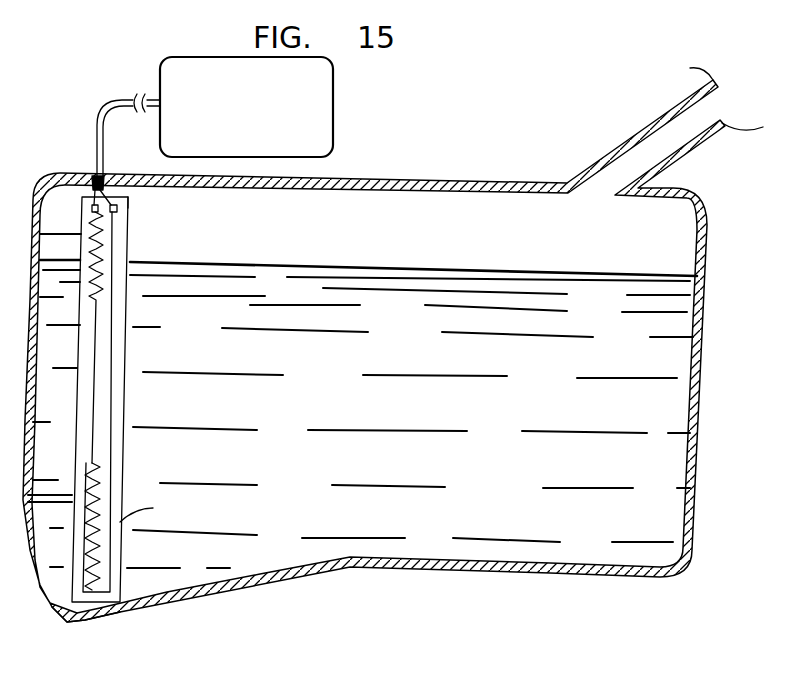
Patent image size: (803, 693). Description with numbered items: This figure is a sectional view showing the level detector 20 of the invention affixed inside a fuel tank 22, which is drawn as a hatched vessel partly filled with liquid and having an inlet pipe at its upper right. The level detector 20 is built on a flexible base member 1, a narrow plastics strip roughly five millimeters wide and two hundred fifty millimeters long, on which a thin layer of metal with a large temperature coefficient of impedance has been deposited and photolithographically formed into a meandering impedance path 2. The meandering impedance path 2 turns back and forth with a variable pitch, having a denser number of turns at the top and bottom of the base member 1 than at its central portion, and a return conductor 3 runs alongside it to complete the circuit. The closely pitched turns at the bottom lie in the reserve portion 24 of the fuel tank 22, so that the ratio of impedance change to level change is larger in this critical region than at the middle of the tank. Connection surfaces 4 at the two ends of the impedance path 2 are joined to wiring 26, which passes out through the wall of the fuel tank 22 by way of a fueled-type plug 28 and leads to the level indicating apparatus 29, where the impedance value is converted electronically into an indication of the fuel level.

The flexible base member 1 is at (123, 457).
The meandering impedance path 2 is at (97, 340).
The return conductor 3 is at (115, 388).
The connection surfaces 4 is at (92, 205).
The level detector 20 is at (196, 395).
The fuel tank 22 is at (355, 177).
The reserve portion 24 is at (90, 624).
The wiring 26 is at (115, 113).
The fueled-type plug 28 is at (96, 177).
The level indicating apparatus 29 is at (333, 105).